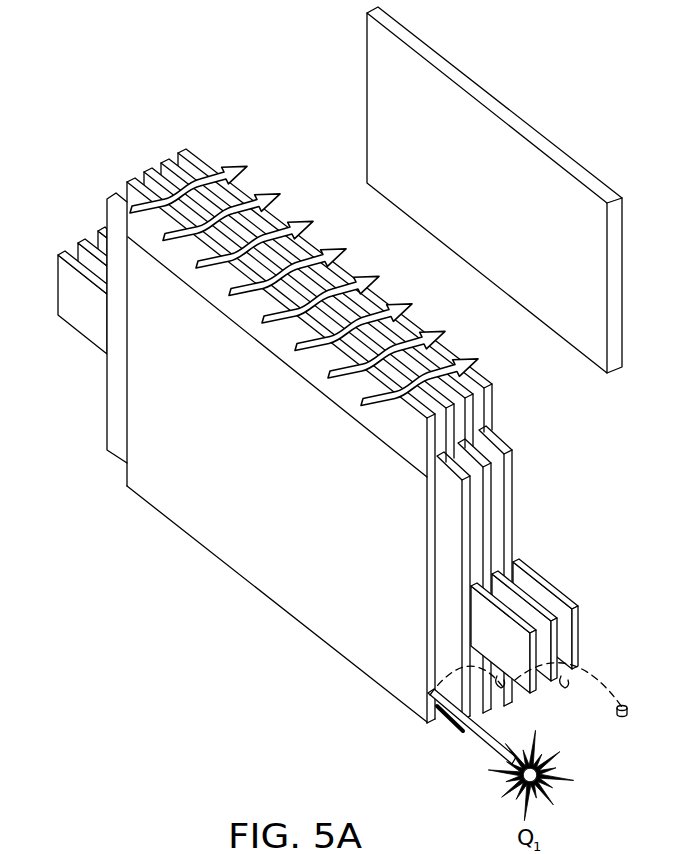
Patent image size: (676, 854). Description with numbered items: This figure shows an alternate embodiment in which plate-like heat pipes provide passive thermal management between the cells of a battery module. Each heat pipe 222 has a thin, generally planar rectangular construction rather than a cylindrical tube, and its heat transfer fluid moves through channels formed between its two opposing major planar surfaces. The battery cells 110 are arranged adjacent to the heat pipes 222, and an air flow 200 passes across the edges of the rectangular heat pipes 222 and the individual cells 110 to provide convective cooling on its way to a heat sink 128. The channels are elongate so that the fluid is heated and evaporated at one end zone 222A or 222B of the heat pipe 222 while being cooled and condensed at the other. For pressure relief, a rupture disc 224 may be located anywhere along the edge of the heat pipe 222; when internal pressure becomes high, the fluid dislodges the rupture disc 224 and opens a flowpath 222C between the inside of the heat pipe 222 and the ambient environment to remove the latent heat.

The battery cell 110 is at (508, 492).
The heat sink 128 is at (563, 187).
The air flow 200 is at (252, 190).
The heat pipe 222 is at (277, 479).
The end zone of heat pipe 222A is at (138, 459).
The end zone of heat pipe 222B is at (215, 290).
The flowpath 222C is at (427, 700).
The rupture disc 224 is at (623, 717).